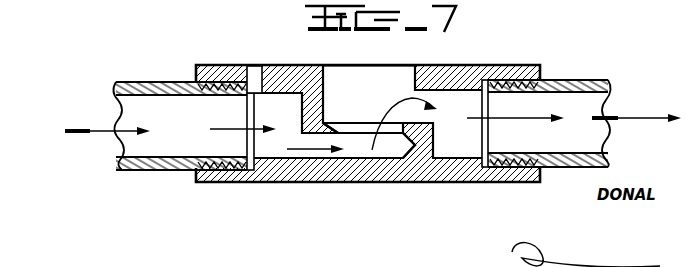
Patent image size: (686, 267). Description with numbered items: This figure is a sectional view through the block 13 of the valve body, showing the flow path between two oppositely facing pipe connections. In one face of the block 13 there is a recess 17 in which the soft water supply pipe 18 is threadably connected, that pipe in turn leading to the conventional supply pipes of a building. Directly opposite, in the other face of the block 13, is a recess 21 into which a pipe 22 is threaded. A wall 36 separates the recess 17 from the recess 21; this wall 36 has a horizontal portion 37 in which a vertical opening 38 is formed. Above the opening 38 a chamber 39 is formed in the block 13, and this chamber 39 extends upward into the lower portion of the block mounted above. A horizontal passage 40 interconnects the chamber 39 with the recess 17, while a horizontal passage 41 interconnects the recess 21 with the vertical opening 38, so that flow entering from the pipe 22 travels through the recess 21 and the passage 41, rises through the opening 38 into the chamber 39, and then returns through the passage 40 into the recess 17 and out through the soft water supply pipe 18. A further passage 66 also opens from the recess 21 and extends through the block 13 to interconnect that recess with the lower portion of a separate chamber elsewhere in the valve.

The block 13 is at (430, 160).
The recess 17 is at (458, 158).
The soft water supply pipe 18 is at (585, 80).
The recess 21 is at (268, 160).
The pipe 22 is at (150, 170).
The wall 36 is at (413, 150).
The horizontal portion 37 is at (323, 134).
The vertical opening 38 is at (362, 134).
The chamber 39 is at (398, 75).
The horizontal passage 40 is at (463, 77).
The horizontal passage 41 is at (386, 138).
The passage 66 is at (261, 62).